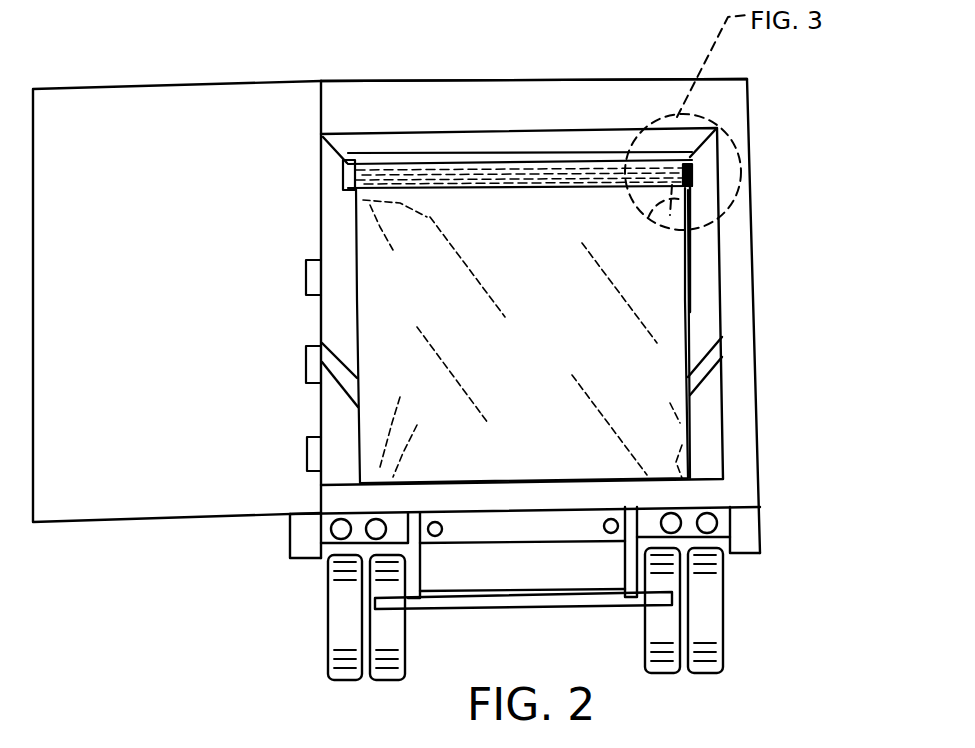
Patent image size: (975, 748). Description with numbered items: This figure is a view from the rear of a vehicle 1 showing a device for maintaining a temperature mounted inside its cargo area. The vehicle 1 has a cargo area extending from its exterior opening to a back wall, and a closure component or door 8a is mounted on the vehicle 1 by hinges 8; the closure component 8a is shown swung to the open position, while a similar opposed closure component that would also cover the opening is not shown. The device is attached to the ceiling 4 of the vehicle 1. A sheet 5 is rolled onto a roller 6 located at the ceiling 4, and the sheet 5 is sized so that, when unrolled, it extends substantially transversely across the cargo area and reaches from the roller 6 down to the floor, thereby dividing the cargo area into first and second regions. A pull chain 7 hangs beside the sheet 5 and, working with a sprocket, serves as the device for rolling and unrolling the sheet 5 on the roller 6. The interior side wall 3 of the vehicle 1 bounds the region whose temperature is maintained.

The vehicle 1 is at (778, 372).
The cargo body frame 3 is at (707, 457).
The ceiling 4 is at (493, 138).
The sheet 5 is at (652, 315).
The roller 6 is at (352, 167).
The pull chain 7 is at (690, 272).
The hinges 8 is at (313, 453).
The closure component 8a is at (133, 125).